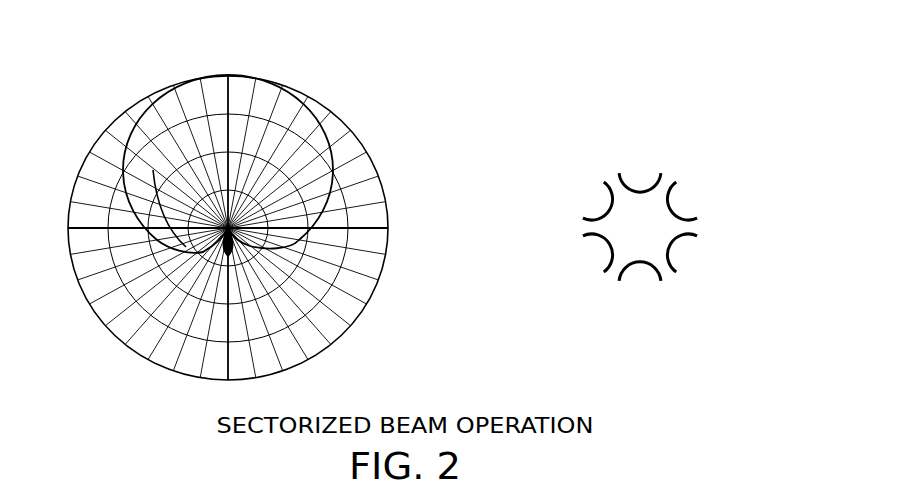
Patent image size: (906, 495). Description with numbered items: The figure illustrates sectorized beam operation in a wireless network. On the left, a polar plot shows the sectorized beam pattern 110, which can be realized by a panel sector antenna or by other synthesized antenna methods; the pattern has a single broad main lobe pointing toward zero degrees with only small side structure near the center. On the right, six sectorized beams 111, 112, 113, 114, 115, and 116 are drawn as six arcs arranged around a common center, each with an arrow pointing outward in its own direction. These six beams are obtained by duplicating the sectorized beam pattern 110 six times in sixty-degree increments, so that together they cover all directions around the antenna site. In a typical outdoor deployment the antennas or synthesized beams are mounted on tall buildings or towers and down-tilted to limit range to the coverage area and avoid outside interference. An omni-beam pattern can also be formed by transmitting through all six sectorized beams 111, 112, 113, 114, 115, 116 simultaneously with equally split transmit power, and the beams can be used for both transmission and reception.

The sectorized beam pattern 110 is at (226, 203).
The sectorized beam 111 is at (640, 178).
The sectorized beam 112 is at (705, 192).
The sectorized beam 113 is at (690, 260).
The sectorized beam 114 is at (640, 285).
The sectorized beam 115 is at (585, 258).
The sectorized beam 116 is at (592, 200).